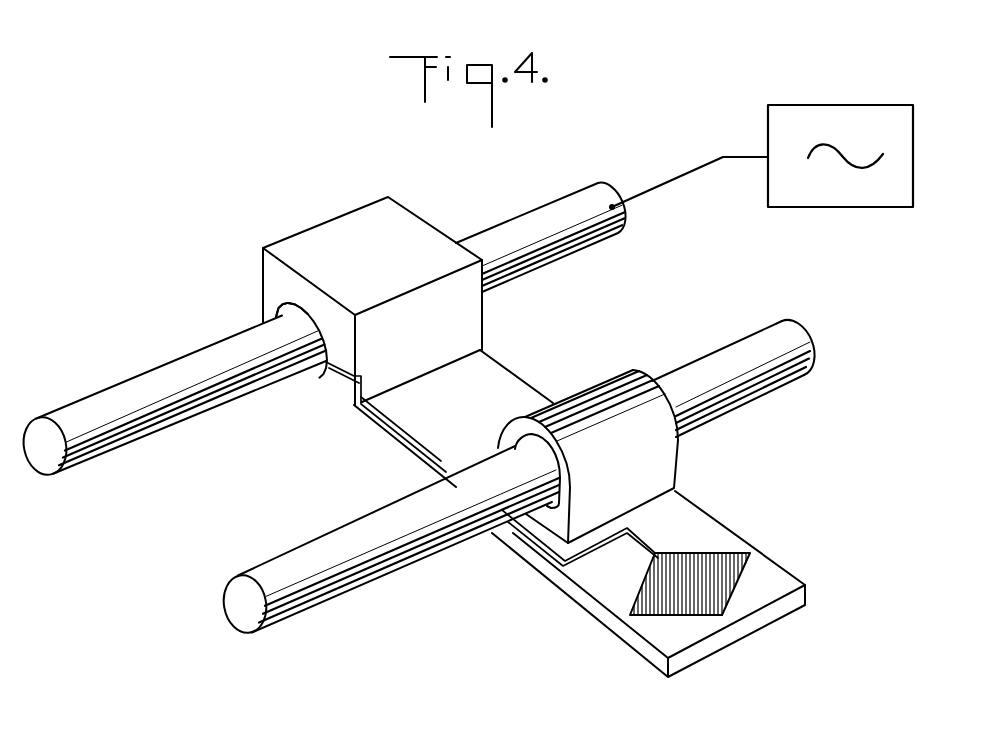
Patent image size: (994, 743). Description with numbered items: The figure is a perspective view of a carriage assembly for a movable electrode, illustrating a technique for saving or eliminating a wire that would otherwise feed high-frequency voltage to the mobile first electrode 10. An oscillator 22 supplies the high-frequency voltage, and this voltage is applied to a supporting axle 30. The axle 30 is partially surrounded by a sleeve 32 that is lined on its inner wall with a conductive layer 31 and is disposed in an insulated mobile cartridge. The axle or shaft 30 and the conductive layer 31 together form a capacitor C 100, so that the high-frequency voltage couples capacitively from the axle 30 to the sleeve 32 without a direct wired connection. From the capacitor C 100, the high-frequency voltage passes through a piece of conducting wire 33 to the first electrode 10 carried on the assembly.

The first electrode 10 is at (749, 553).
The oscillator 22 is at (849, 125).
The supporting axle 30 is at (147, 380).
The conductive layer 31 is at (311, 373).
The sleeve 32 is at (395, 229).
The conducting wire 33 is at (421, 452).
The capacitor C100 100 is at (280, 308).